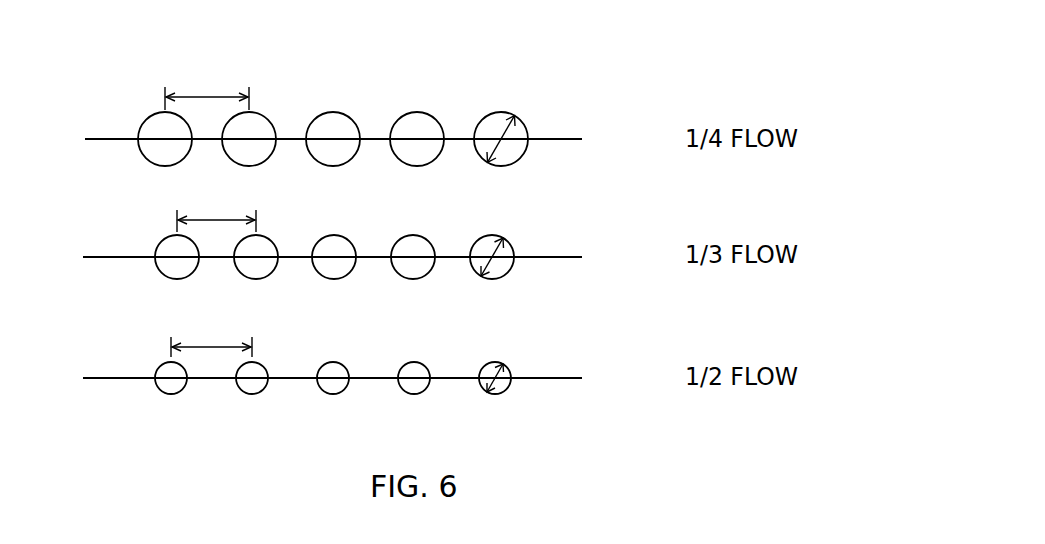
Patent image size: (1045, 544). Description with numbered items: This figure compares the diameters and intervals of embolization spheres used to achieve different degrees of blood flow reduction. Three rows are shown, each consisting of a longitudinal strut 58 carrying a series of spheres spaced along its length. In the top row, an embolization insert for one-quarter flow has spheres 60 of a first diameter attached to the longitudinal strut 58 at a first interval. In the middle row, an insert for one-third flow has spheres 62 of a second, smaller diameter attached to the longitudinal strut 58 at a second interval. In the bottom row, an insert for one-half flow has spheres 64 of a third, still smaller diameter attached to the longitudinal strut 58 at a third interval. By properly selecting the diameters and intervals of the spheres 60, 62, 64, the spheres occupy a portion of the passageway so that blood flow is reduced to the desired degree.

The longitudinal struts 58 is at (568, 139).
The spheres 60 is at (147, 119).
The spheres 62 is at (161, 242).
The spheres 64 is at (160, 366).